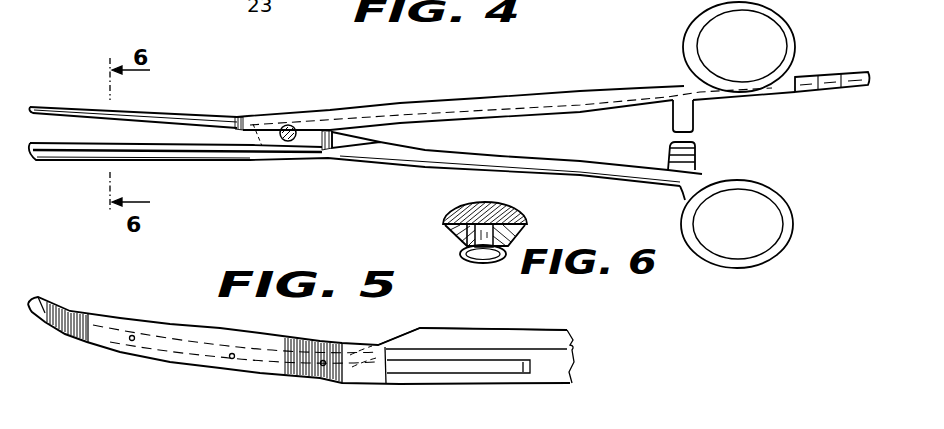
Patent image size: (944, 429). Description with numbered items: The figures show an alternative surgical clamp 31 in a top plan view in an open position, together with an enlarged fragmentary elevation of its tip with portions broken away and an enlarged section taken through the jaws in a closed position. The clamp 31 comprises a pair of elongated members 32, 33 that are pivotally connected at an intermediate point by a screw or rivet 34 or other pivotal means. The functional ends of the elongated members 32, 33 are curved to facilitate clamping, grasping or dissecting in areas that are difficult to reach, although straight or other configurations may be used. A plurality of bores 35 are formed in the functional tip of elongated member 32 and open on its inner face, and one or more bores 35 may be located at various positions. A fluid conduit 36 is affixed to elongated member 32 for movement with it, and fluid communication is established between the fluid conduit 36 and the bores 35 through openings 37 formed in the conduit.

In FIG. 4, the clamp 31 is at (375, 93).
In FIG. 4, the elongated member 32 is at (97, 148).
In FIG. 6, the elongated member 32 is at (528, 228).
In FIG. 5, the elongated member 32 is at (184, 335).
In FIG. 4, the elongated member 33 is at (50, 107).
In FIG. 6, the elongated member 33 is at (513, 212).
In FIG. 5, the elongated member 33 is at (370, 377).
In FIG. 4, the screw or rivet 34 is at (288, 141).
In FIG. 6, the bores 35 is at (448, 228).
In FIG. 5, the bores 35 is at (131, 336).
In FIG. 4, the fluid conduit 36 is at (197, 161).
In FIG. 6, the fluid conduit 36 is at (462, 262).
In FIG. 5, the fluid conduit 36 is at (120, 345).
In FIG. 6, the openings 37 is at (490, 256).